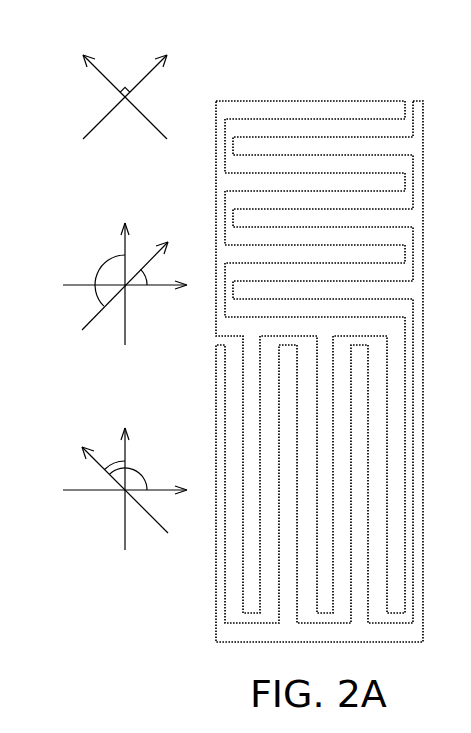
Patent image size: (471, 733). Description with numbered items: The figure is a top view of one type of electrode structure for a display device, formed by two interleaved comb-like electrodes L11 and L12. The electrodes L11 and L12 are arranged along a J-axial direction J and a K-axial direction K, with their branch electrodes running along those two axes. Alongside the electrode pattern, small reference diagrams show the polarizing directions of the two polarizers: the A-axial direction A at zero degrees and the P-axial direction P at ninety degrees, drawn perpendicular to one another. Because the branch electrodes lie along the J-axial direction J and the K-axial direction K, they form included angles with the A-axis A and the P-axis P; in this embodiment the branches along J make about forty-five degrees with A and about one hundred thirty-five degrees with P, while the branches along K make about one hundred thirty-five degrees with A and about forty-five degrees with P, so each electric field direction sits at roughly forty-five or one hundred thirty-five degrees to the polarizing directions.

The electrode L11 is at (417, 109).
The electrode L12 is at (338, 109).
The P-axial direction P is at (117, 284).
The A-axial direction A is at (127, 183).
The J-axial direction J is at (129, 388).
The K-axial direction K is at (124, 377).